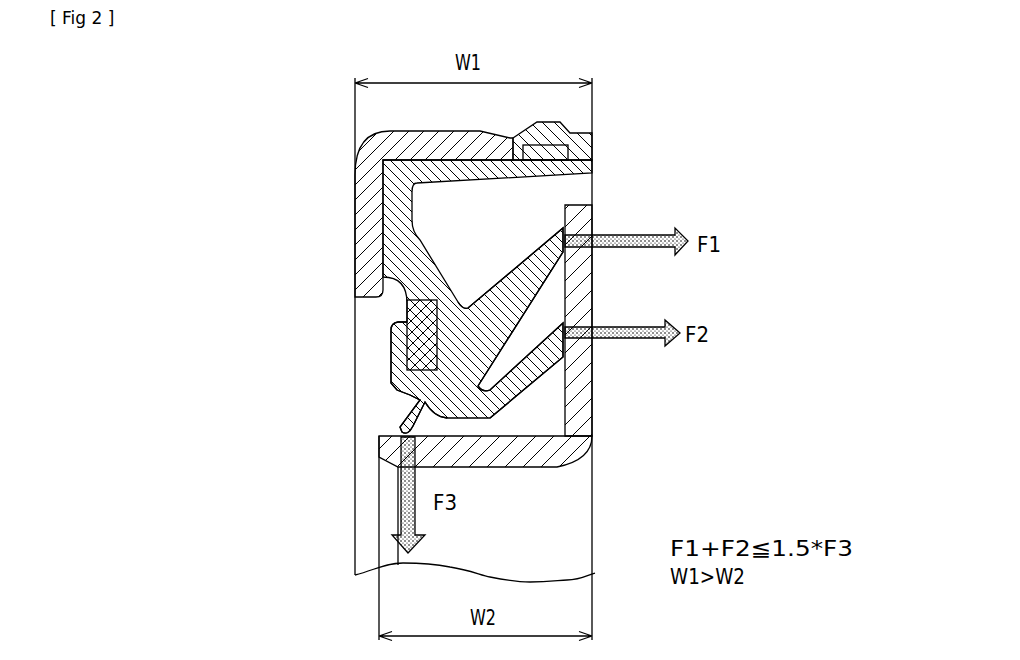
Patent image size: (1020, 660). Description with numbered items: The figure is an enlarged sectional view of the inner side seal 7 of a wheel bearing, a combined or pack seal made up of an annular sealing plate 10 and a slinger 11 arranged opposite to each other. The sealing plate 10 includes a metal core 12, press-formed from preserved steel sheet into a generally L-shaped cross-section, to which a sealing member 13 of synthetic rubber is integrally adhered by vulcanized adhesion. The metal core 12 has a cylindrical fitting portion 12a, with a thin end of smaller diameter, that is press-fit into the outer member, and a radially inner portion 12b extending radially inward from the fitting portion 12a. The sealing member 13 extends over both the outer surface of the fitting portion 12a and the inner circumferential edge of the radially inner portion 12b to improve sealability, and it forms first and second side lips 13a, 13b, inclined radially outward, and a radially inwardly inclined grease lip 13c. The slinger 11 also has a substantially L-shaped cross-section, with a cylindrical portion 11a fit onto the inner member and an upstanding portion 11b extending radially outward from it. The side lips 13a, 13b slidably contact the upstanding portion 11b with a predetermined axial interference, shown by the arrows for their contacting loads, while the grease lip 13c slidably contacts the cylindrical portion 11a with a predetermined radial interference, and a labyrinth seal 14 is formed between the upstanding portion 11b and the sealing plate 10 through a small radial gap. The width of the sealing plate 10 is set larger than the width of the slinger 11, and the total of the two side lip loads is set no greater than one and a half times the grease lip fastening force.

The inner side seal 7 is at (454, 258).
The sealing plate 10 is at (366, 282).
The slinger 11 is at (559, 336).
The cylindrical portion 11a is at (487, 443).
The upstanding portion 11b is at (575, 370).
The metal core 12 is at (396, 282).
The cylindrical fitting portion 12a is at (430, 144).
The radially inner portion 12b is at (397, 263).
The sealing member 13 is at (381, 330).
The first side lip 13a is at (553, 248).
The second side lip 13b is at (550, 338).
The grease lip 13c is at (410, 427).
The labyrinth seal 14 is at (578, 188).